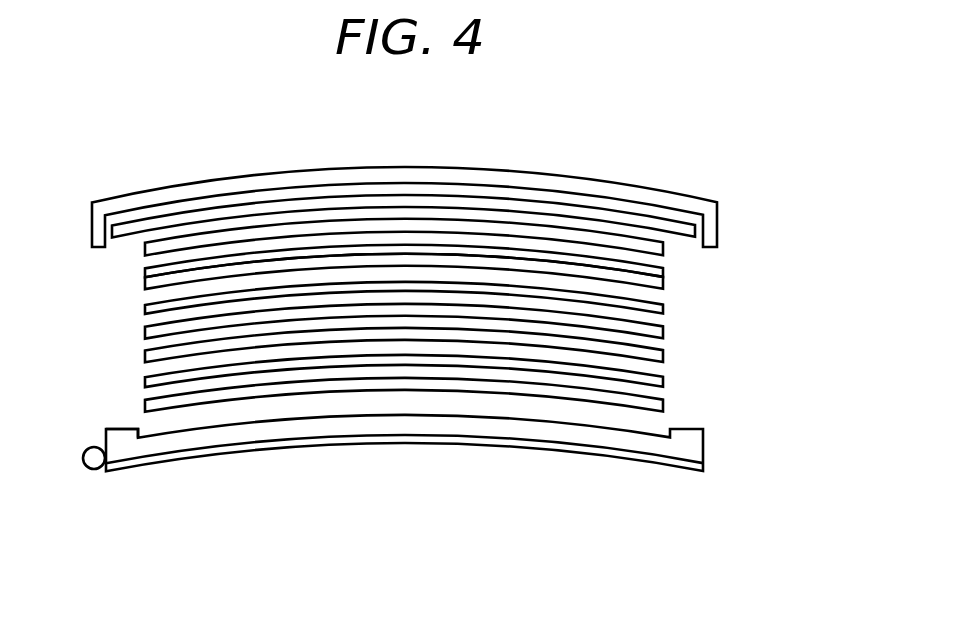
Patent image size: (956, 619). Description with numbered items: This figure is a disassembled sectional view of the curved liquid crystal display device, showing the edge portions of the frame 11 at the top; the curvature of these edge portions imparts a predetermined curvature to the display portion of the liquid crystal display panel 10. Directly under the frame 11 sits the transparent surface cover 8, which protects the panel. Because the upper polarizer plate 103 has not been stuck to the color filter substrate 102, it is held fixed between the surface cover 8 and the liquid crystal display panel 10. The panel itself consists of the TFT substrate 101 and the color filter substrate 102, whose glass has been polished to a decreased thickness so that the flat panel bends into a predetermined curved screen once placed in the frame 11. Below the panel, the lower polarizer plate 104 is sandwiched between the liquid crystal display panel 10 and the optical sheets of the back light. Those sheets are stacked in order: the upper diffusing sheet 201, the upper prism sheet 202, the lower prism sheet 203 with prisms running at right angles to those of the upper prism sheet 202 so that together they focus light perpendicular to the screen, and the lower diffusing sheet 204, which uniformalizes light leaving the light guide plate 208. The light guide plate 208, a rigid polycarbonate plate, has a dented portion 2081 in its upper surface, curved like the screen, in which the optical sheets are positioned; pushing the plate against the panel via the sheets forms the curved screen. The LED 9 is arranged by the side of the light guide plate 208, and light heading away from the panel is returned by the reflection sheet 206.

The frame 11 is at (463, 168).
The surface cover 8 is at (553, 203).
The upper polarizer plate 103 is at (615, 233).
The liquid crystal display panel 10 is at (487, 272).
The color filter substrate 102 is at (662, 265).
The TFT substrate 101 is at (662, 288).
The lower polarizer plate 104 is at (662, 308).
The upper diffusing sheet 201 is at (662, 330).
The upper prism sheet 202 is at (662, 362).
The lower prism sheet 203 is at (662, 391).
The lower diffusing sheet 204 is at (668, 420).
The light guide plate 208 is at (700, 452).
The dented portion 2081 is at (178, 430).
The reflection sheet 206 is at (590, 458).
The LED 9 is at (93, 470).